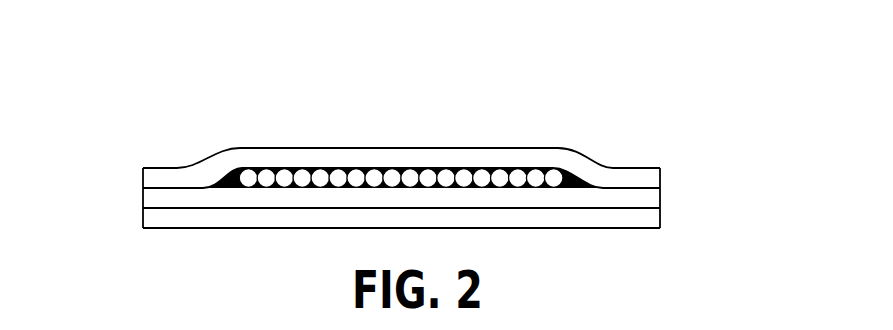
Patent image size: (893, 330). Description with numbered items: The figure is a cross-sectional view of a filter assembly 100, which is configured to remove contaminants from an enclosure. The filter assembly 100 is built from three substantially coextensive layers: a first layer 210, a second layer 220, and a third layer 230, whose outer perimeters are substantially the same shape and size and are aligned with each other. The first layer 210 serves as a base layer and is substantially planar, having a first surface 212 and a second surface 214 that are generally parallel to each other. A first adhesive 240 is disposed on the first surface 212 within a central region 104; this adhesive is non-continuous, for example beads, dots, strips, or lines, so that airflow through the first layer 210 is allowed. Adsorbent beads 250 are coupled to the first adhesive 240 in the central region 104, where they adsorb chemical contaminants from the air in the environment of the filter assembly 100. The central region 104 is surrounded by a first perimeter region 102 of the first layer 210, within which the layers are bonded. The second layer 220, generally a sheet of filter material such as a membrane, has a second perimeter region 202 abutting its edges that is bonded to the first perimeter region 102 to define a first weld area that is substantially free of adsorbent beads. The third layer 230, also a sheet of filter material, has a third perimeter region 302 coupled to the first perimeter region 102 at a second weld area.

The filter assembly 100 is at (551, 49).
The first perimeter region 102 is at (173, 148).
The central region 104 is at (347, 122).
The second perimeter region 202 is at (615, 178).
The first layer 210 is at (653, 198).
The first surface 212 is at (157, 187).
The second surface 214 is at (148, 210).
The second layer 220 is at (653, 181).
The third layer 230 is at (653, 223).
The first adhesive 240 is at (580, 178).
The adsorbent beads 250 is at (462, 178).
The third perimeter region 302 is at (609, 242).